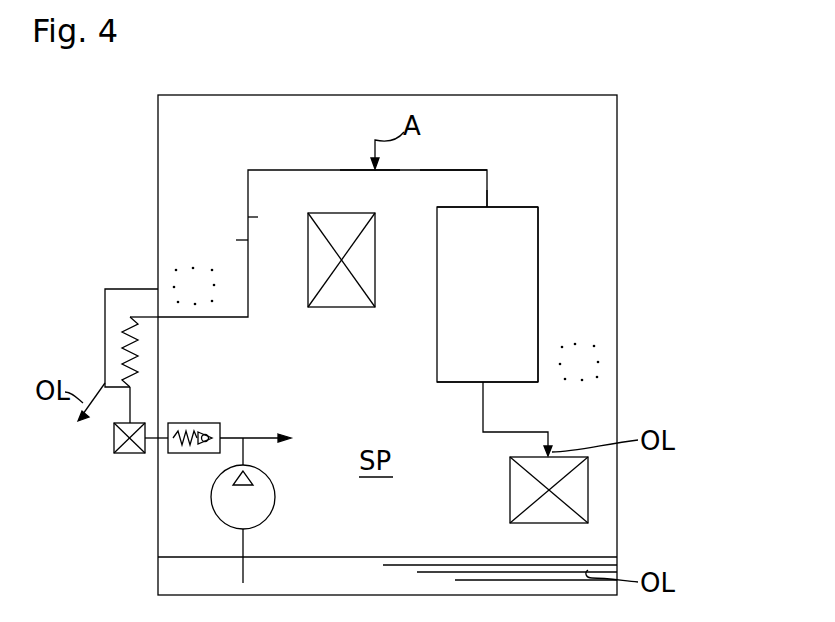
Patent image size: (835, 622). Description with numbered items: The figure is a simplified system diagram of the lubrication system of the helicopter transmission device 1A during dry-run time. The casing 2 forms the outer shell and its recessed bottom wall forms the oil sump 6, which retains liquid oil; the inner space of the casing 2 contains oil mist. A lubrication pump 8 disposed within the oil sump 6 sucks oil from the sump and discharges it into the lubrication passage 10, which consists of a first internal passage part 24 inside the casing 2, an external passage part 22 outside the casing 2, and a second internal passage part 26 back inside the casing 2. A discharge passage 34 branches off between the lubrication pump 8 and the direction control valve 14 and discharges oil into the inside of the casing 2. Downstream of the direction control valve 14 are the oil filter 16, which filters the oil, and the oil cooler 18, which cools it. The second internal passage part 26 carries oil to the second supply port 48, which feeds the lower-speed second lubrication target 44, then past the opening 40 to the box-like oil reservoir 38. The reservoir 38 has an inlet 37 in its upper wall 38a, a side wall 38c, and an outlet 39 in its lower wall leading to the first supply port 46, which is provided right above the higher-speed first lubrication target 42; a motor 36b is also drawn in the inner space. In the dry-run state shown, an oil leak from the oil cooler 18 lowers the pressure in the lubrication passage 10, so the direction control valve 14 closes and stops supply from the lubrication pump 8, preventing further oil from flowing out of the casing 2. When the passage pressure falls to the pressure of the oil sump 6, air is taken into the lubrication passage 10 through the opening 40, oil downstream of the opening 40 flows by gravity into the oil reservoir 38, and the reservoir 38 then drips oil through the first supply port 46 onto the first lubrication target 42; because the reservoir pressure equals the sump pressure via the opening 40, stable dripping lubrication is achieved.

The transmission device 1A is at (655, 167).
The casing 2 is at (619, 125).
The oil sump 6 is at (167, 583).
The lubrication pump 8 is at (273, 500).
The lubrication passage 10 is at (462, 170).
The direction control valve 14 is at (178, 453).
The oil filter 16 is at (124, 453).
The oil cooler 18 is at (115, 353).
The external passage part 22 is at (128, 407).
The first internal passage part 24 is at (163, 432).
The second internal passage part 26 is at (280, 170).
The discharge passage 34 is at (258, 437).
The motor 36b is at (520, 382).
The inlet 37 is at (487, 207).
The oil reservoir 38 is at (532, 276).
The upper wall 38a is at (523, 207).
The side wall 38c is at (538, 248).
The outlet 39 is at (484, 382).
The opening 40 is at (372, 170).
The first lubrication target 42 is at (584, 490).
The second lubrication target 44 is at (341, 307).
The first supply port 46 is at (548, 432).
The second supply port 48 is at (252, 273).